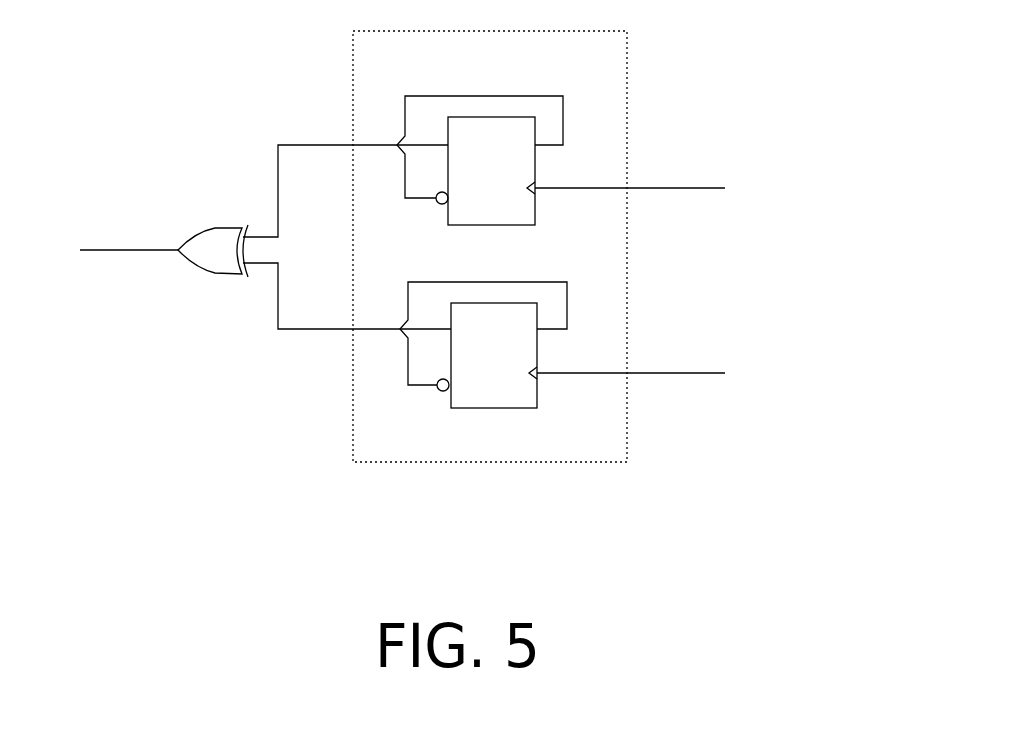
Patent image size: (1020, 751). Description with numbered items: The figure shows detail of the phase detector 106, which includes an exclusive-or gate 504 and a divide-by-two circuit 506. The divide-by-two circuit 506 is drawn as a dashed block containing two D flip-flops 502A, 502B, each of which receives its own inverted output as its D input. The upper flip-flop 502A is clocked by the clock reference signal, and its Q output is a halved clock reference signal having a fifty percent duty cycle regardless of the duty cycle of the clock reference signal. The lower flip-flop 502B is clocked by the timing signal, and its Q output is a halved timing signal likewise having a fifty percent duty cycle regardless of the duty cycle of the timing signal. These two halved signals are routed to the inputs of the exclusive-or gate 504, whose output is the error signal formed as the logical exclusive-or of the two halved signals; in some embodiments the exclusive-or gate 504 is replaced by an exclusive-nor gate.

The phase detector 106 is at (883, 252).
The D flip-flop 502A is at (483, 225).
The D flip-flop 502B is at (483, 408).
The exclusive-or gate 504 is at (213, 251).
The divide-by-two circuit 506 is at (539, 246).